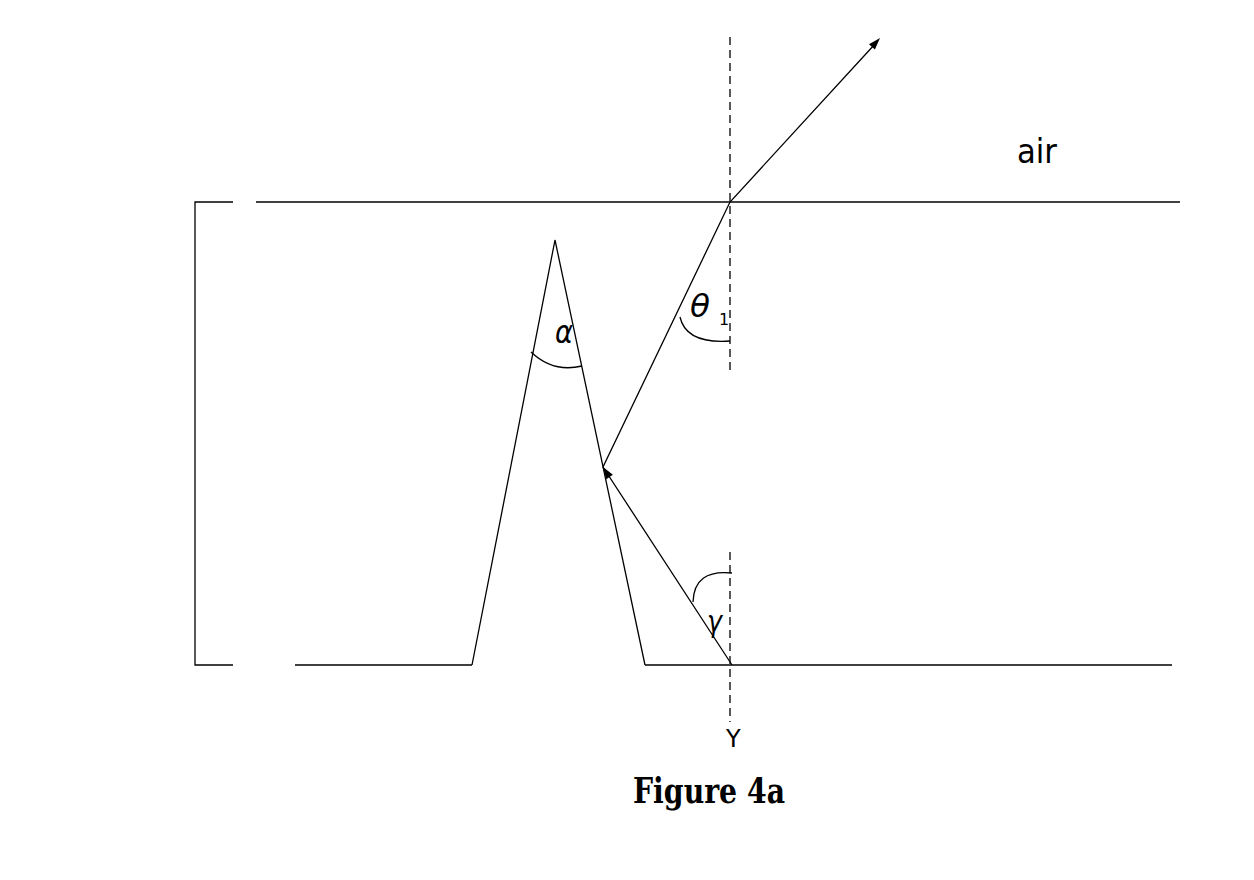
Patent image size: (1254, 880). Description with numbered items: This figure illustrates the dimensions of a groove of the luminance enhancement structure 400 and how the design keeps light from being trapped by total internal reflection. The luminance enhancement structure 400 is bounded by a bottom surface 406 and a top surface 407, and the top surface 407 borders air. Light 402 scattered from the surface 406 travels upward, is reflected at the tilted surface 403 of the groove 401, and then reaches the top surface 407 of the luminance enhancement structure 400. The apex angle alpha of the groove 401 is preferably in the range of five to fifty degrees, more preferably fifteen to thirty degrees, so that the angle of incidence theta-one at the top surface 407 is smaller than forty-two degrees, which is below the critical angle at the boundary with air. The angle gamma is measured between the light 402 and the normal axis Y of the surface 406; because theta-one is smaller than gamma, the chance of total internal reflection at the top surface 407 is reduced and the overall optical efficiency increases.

The luminance enhancement structure 400 is at (195, 428).
The groove 401 is at (470, 452).
The light 402 is at (664, 533).
The tilted surface 403 is at (572, 383).
The surface 406 is at (944, 667).
The top surface 407 is at (754, 207).